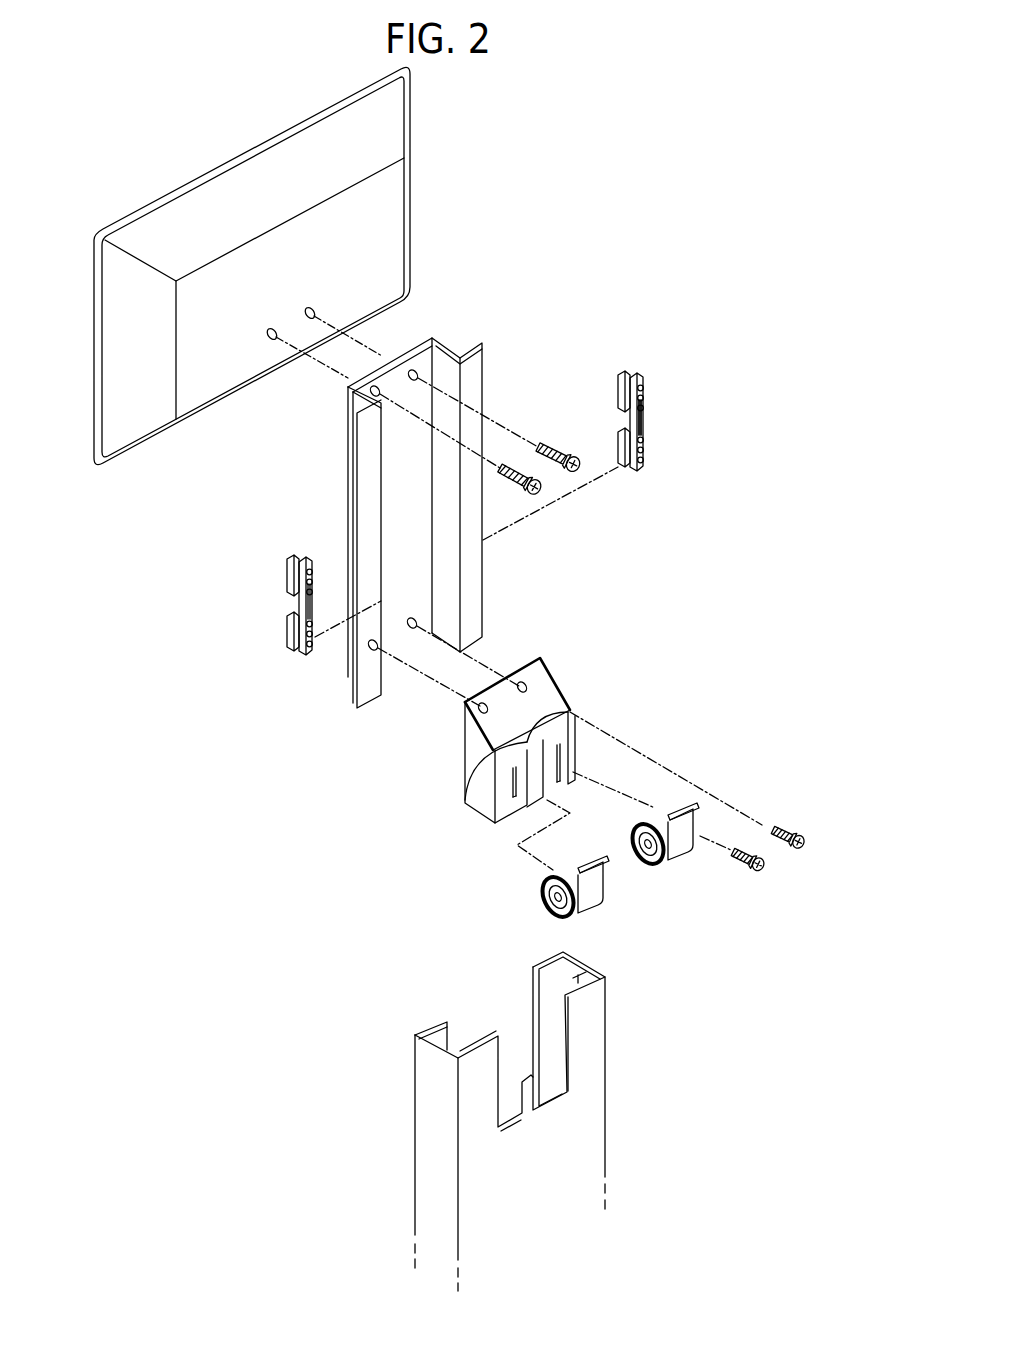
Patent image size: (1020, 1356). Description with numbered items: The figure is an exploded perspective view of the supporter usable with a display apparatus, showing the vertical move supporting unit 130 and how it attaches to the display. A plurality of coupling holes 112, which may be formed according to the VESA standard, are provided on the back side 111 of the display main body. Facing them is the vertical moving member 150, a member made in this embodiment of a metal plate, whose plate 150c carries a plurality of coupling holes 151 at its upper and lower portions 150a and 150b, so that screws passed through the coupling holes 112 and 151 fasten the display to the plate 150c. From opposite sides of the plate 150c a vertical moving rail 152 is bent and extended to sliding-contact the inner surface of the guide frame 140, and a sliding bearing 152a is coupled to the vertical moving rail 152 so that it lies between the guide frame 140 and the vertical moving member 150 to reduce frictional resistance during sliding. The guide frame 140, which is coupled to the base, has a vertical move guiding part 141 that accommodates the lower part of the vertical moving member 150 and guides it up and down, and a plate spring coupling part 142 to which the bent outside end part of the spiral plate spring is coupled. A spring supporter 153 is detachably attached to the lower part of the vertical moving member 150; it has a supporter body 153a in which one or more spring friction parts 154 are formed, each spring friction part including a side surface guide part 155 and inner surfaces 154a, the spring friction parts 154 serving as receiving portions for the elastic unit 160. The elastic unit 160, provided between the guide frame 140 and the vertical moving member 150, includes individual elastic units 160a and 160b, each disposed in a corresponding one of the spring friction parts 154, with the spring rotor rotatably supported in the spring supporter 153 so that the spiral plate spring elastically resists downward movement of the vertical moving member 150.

The back side 111 is at (208, 392).
The coupling holes 112 is at (310, 320).
The vertical move supporting unit 130 is at (562, 232).
The guide frame 140 is at (548, 1121).
The vertical move guiding part 141 is at (590, 983).
The plate spring coupling part 142 is at (567, 1075).
The vertical moving member 150 is at (565, 516).
The upper portion 150a is at (452, 352).
The lower portion 150b is at (370, 697).
The plate 150c is at (403, 353).
The coupling holes 151 is at (418, 376).
The vertical moving rail 152 is at (480, 363).
The sliding bearing 152a is at (715, 424).
The spring supporter 153 is at (628, 760).
The supporter body 153a is at (556, 692).
The spring friction parts 154 is at (560, 707).
The inner surfaces 154a is at (567, 767).
The side surface guide part 155 is at (565, 758).
The elastic unit 160 is at (671, 887).
The elastic unit 160a is at (595, 905).
The elastic unit 160b is at (688, 857).